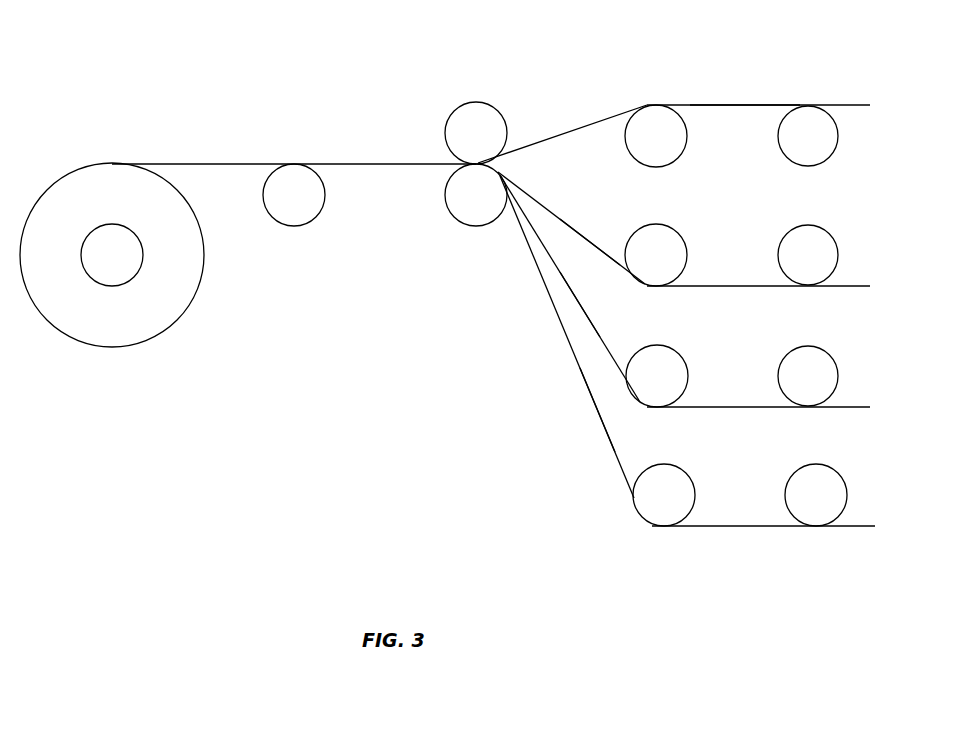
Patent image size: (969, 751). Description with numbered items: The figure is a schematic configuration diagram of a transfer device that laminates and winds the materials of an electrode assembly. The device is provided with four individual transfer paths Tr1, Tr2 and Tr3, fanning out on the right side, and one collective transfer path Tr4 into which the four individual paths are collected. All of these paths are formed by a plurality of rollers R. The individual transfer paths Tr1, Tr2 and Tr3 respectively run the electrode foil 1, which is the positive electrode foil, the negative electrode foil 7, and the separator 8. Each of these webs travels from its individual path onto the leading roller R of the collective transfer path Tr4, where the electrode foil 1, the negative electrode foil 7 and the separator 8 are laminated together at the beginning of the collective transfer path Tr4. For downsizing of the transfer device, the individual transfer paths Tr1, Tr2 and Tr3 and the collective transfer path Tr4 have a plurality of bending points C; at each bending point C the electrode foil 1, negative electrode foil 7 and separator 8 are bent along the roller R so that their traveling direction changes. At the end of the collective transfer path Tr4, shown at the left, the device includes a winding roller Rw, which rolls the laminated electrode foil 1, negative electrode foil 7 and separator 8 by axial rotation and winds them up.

The winding roller Rw is at (120, 257).
The collective transfer path Tr4 is at (348, 150).
The individual transfer path Tr1 is at (748, 88).
The individual transfer path Tr2 is at (752, 388).
The individual transfer path Tr3 is at (742, 262).
The roller R is at (316, 224).
The bending point C is at (437, 176).
The electrode foil 1 is at (700, 104).
The negative electrode foil 7 is at (601, 346).
The separator 8 is at (597, 245).